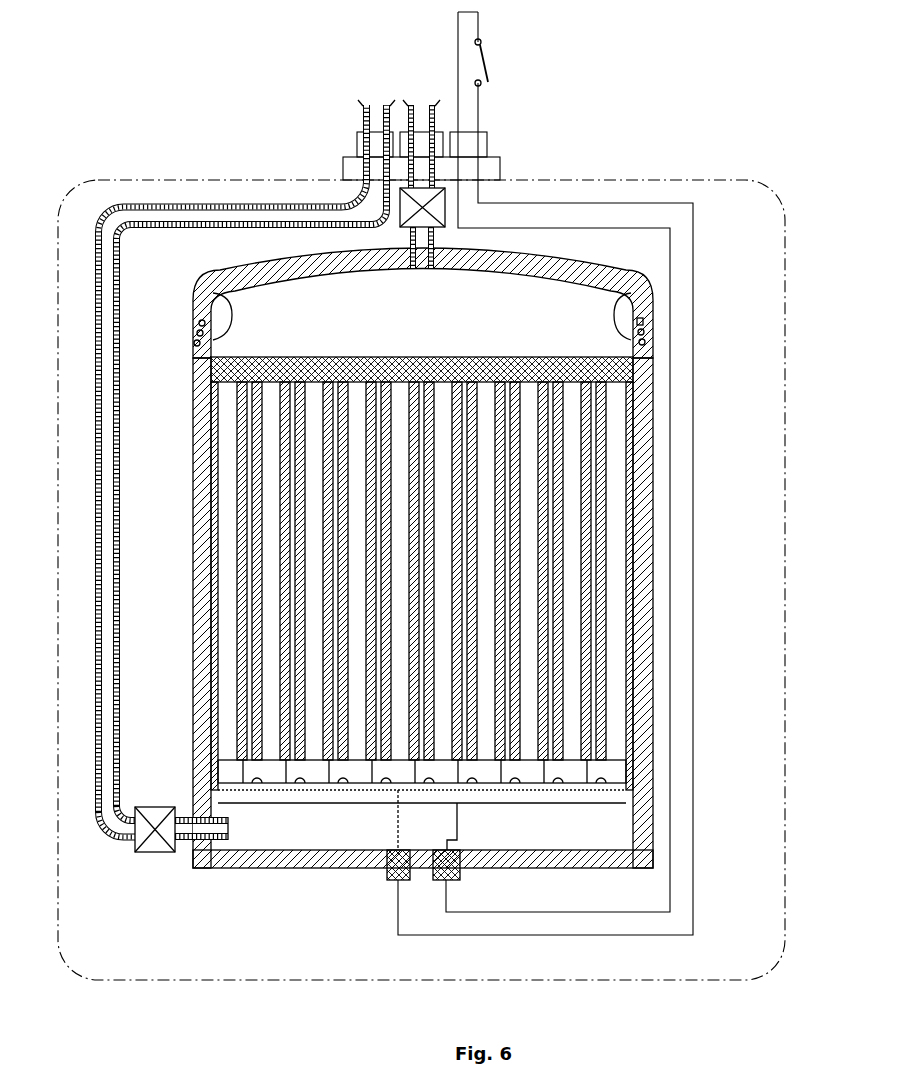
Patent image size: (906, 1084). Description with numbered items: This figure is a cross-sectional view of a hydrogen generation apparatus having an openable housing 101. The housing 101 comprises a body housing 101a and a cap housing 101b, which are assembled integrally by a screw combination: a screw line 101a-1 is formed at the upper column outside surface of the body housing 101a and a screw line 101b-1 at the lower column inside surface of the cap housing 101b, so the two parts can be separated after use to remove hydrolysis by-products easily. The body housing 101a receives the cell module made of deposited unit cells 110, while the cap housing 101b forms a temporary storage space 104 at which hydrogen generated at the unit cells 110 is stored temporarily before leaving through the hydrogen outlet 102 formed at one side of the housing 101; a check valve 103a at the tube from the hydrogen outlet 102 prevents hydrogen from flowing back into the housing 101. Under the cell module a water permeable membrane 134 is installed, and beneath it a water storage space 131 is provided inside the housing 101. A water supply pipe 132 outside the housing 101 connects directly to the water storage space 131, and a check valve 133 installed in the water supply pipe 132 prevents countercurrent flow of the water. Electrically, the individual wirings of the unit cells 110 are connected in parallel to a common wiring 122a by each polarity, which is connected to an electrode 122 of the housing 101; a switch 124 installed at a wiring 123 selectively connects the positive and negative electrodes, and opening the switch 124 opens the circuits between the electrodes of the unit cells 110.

The housing 101 is at (547, 554).
The body housing 101a is at (650, 387).
The cap housing 101b is at (653, 303).
The screw line 101a-1 is at (196, 337).
The screw line 101b-1 is at (227, 297).
The hydrogen outlet 102 is at (433, 116).
The check valve 103a is at (390, 188).
The temporary storage space 104 is at (543, 308).
The unit cells 110 is at (527, 770).
The electrode of the housing 122 is at (387, 878).
The common wiring 122a is at (323, 793).
The wiring 123 is at (398, 915).
The switch 124 is at (488, 60).
The water storage space 131 is at (228, 870).
The water supply pipe 132 is at (95, 690).
The check valve 133 is at (150, 853).
The water permeable membrane 134 is at (207, 775).